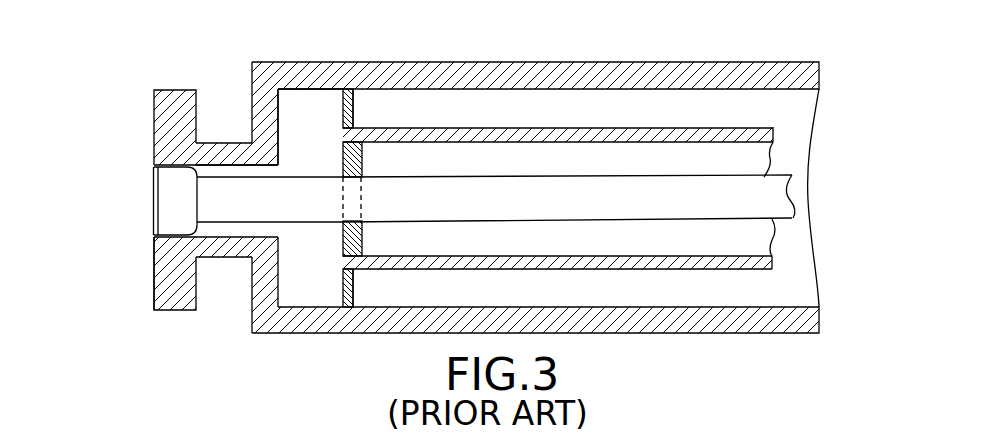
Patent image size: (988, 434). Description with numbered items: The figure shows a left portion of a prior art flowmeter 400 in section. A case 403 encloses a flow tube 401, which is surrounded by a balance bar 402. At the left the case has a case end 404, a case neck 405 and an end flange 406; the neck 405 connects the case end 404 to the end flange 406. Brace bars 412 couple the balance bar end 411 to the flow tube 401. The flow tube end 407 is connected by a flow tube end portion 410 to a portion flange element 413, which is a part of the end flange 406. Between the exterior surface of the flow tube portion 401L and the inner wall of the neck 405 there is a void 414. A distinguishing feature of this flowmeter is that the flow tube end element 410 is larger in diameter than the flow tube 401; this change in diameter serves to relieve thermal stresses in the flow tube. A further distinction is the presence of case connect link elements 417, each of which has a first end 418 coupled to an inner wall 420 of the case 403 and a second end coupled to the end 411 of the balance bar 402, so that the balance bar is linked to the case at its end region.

The prior art unit 400 is at (533, 49).
The flow tube 401 is at (520, 210).
The flow tube portion 401L is at (278, 213).
The balance bar 402 is at (523, 129).
The case 403 is at (648, 75).
The case end 404 is at (252, 90).
The case neck 405 is at (232, 143).
The end flange 406 is at (167, 76).
The flow tube end 407 is at (154, 190).
The flow tube end portion 410 is at (185, 203).
The balance bar end 411 is at (353, 103).
The brace bar 412 is at (362, 155).
The portion flange element 413 is at (154, 245).
The void 414 is at (248, 172).
The case connect link element 417 is at (353, 107).
The first end 418 is at (310, 113).
The inner wall 420 is at (527, 308).